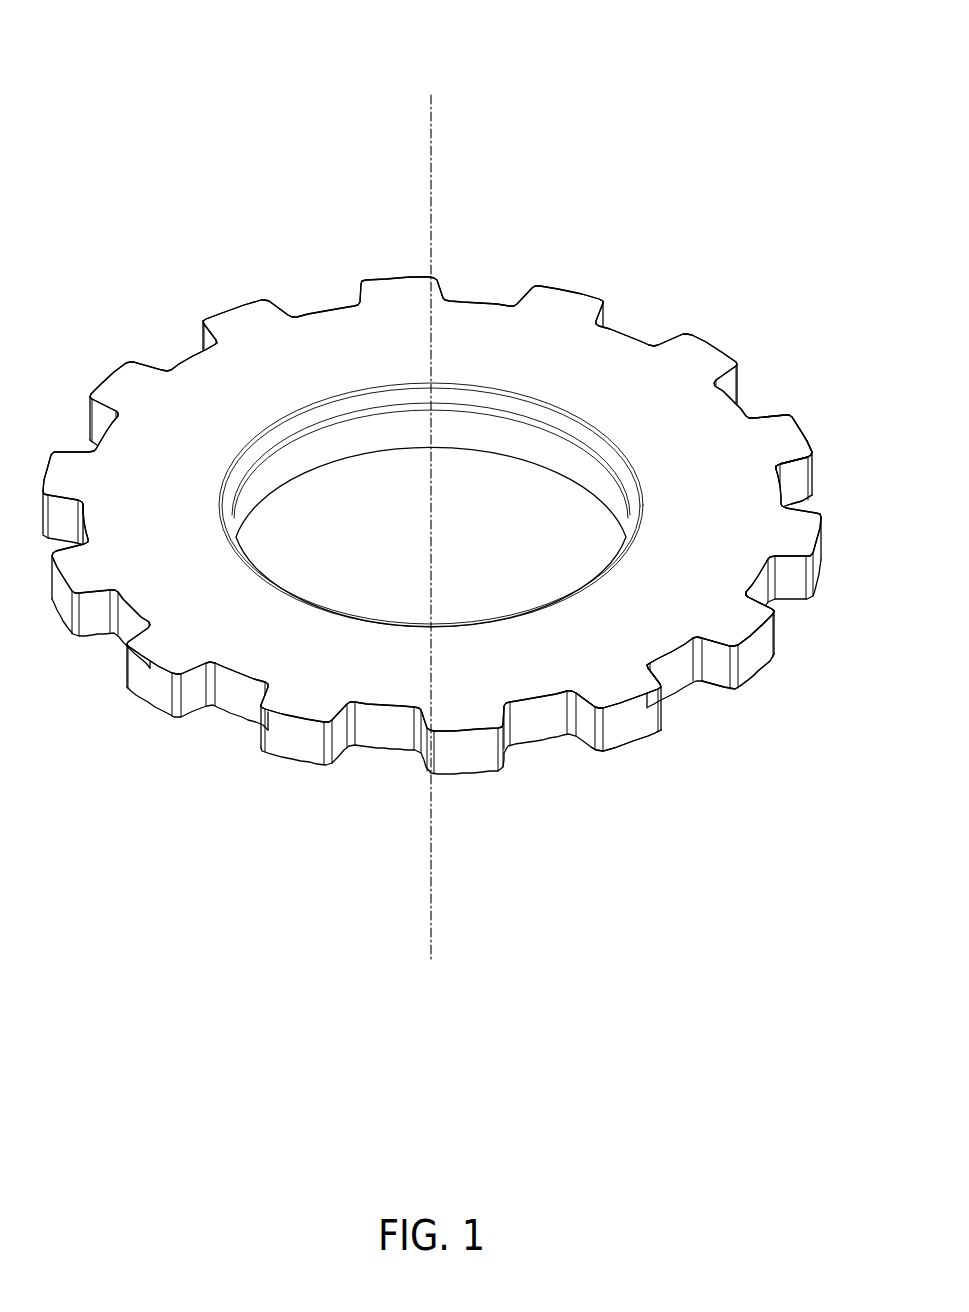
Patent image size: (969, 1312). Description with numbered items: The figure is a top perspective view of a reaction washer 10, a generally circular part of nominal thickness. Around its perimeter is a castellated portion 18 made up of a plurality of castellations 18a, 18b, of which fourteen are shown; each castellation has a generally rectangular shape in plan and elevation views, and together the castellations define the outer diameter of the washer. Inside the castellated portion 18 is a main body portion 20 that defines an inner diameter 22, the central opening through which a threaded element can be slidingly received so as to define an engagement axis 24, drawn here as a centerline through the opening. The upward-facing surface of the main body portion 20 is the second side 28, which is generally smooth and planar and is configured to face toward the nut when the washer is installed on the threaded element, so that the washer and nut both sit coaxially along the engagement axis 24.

The reaction washer 10 is at (146, 52).
The castellated portion 18 is at (588, 237).
The castellation 18a is at (753, 657).
The castellation 18b is at (621, 721).
The main body portion 20 is at (715, 432).
The inner diameter 22 is at (367, 407).
The engagement axis 24 is at (432, 146).
The second side 28 is at (768, 450).